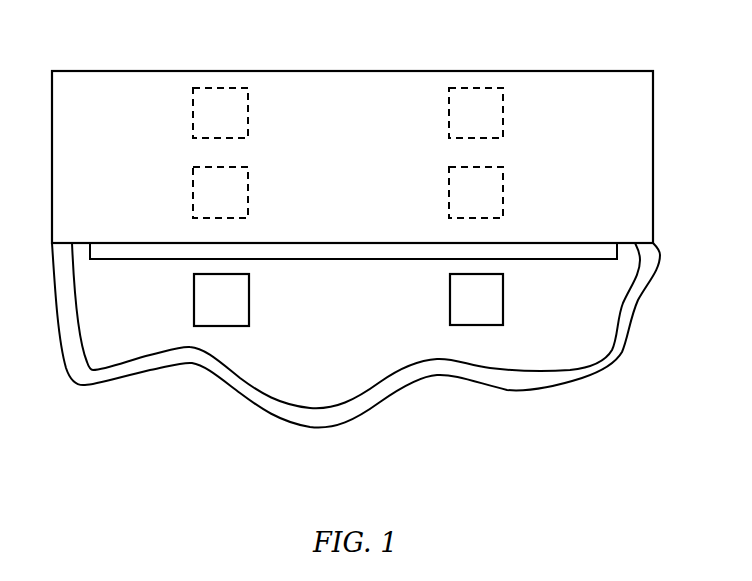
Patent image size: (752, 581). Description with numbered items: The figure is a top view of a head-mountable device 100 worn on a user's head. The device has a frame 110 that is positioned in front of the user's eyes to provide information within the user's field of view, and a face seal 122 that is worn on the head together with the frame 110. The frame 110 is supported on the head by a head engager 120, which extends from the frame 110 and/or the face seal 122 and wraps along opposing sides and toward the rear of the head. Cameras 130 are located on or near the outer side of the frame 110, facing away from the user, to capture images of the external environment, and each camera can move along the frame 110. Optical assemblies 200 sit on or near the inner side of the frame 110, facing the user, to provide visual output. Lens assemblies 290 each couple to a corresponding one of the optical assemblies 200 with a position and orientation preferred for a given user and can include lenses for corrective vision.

The head-mountable device 100 is at (352, 122).
The frame 110 is at (118, 92).
The head engager 120 is at (622, 360).
The face seal 122 is at (360, 260).
The cameras 130 is at (213, 88).
The optical assemblies 200 is at (194, 197).
The lens assemblies 290 is at (194, 307).